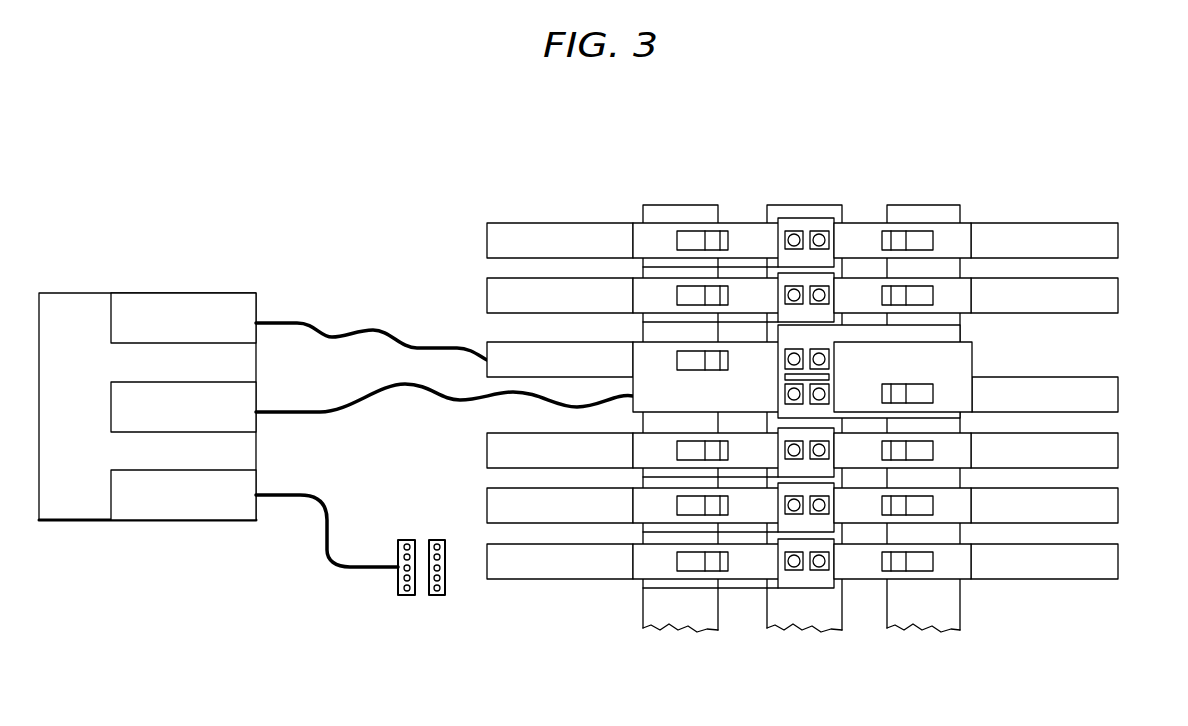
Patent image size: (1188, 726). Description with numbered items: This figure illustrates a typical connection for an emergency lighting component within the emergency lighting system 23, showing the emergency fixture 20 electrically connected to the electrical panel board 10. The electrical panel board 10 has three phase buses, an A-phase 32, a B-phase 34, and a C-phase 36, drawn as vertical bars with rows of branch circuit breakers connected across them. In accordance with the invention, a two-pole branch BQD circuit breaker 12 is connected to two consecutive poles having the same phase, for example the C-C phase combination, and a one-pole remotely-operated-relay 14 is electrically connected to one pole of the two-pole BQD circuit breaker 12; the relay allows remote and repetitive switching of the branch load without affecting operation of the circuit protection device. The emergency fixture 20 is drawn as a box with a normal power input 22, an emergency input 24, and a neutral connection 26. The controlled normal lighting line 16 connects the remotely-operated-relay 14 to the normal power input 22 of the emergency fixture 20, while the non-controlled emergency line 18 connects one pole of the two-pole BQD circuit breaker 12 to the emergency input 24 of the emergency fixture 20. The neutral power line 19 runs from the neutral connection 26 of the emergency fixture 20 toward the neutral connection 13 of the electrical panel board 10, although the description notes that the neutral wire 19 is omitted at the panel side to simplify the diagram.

The electrical panel board 10 is at (801, 392).
The 2-pole branch BQD circuit breaker 12 is at (633, 412).
The neutral connection 13 is at (397, 548).
The remotely-operated-relay 14 is at (560, 233).
The controlled normal lighting line 16 is at (331, 337).
The non-controlled emergency line 18 is at (328, 413).
The neutral power line 19 is at (367, 570).
The emergency fixture 20 is at (165, 404).
The normal power input 22 is at (230, 303).
The emergency lighting system 23 is at (444, 320).
The emergency input 24 is at (250, 423).
The neutral connection 26 is at (233, 512).
The A-phase 32 is at (676, 628).
The B-phase 34 is at (800, 625).
The C-phase 36 is at (920, 625).